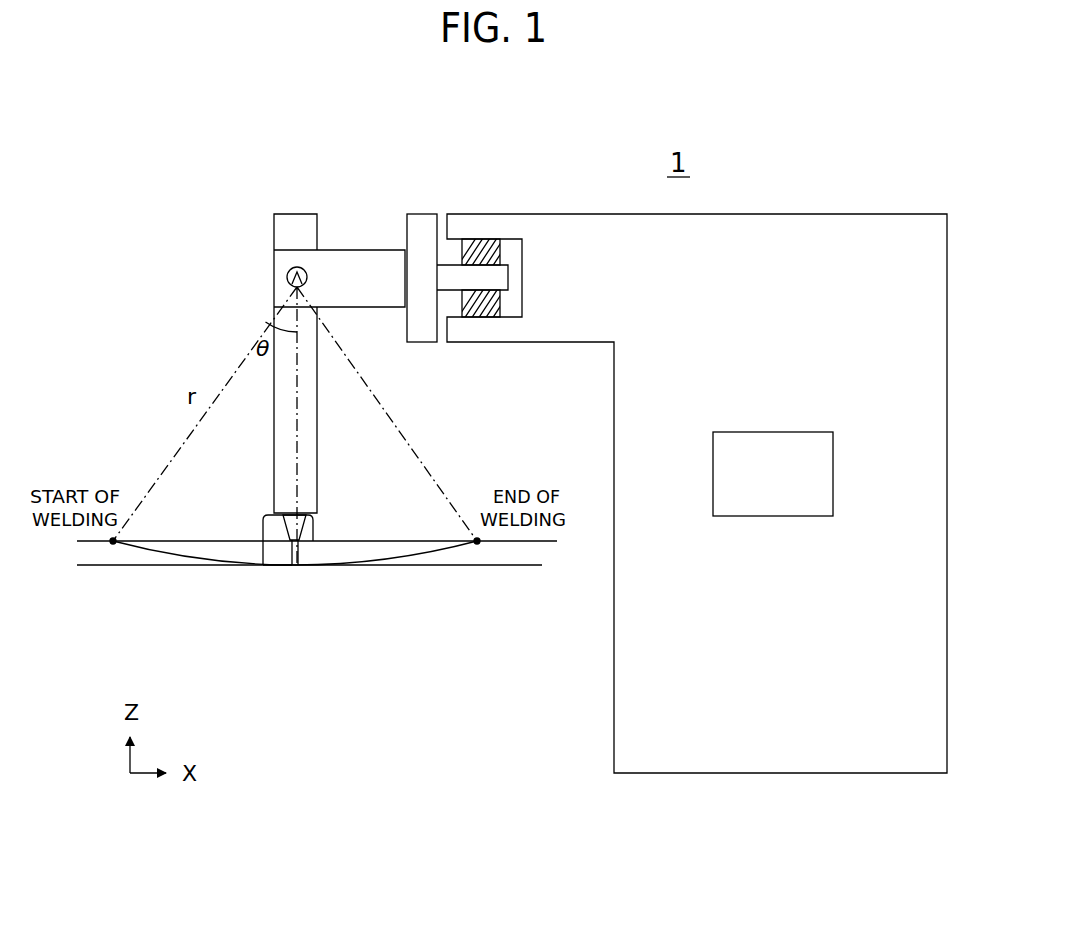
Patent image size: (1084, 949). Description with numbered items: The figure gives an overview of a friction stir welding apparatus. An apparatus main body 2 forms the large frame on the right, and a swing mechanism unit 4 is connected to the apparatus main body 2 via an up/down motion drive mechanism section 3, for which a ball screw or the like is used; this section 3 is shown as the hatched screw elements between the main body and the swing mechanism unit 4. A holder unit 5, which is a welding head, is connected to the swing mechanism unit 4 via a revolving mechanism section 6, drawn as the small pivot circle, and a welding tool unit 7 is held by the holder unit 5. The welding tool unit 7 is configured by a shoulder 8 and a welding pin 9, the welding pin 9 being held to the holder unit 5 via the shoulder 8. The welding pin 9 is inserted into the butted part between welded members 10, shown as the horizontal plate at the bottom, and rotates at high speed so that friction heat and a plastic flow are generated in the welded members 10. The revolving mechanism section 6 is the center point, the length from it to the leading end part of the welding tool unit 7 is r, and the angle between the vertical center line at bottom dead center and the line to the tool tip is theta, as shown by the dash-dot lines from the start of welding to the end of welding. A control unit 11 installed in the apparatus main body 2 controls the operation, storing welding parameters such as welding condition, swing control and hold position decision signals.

The apparatus main body 2 is at (828, 214).
The up/down motion drive mechanism section 3 is at (480, 243).
The swing mechanism unit 4 is at (405, 246).
The holder unit 5 is at (274, 222).
The revolving mechanism section 6 is at (287, 277).
The welding tool unit 7 is at (263, 527).
The shoulder 8 is at (307, 523).
The welding pin 9 is at (299, 555).
The welded members 10 is at (528, 552).
The control unit 11 is at (787, 431).